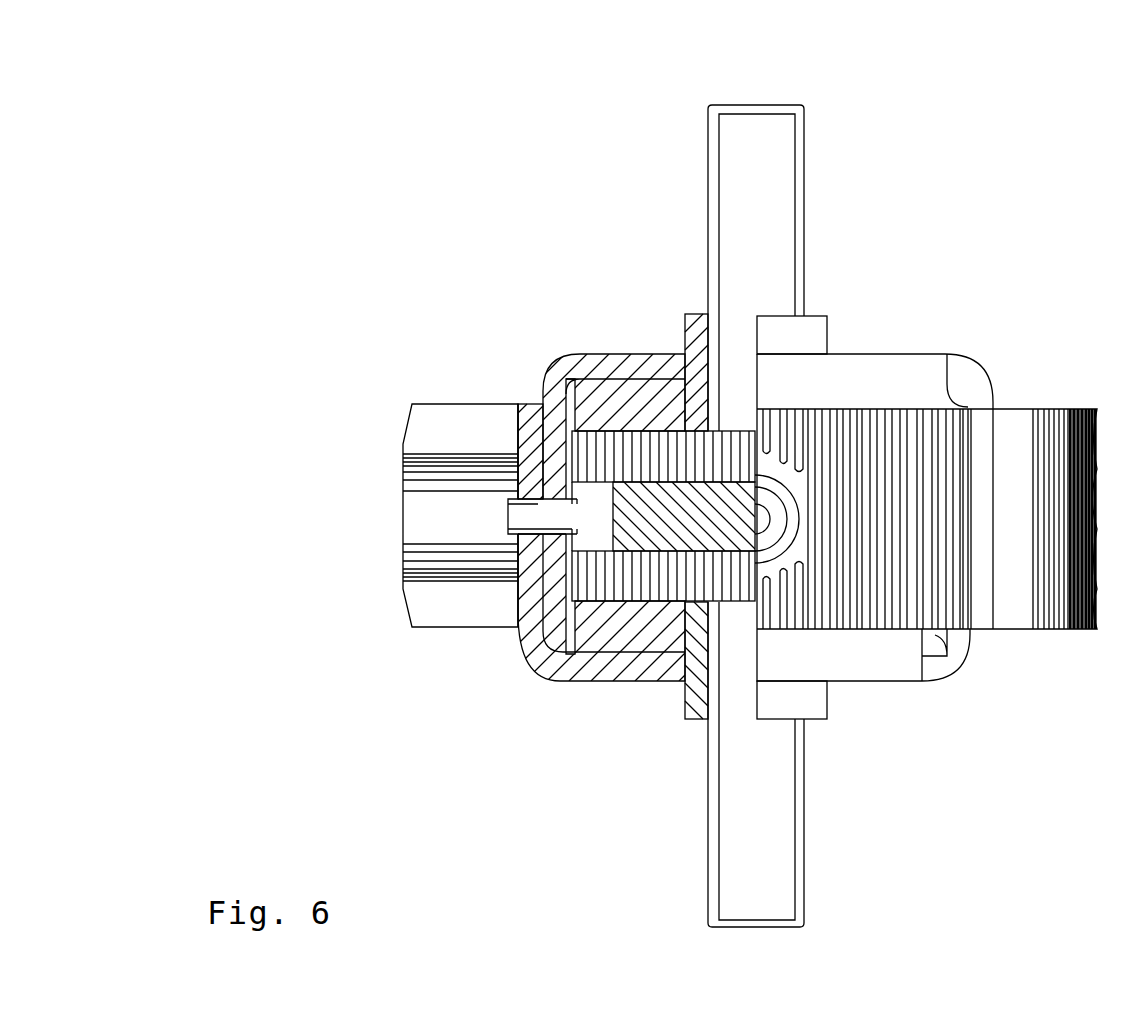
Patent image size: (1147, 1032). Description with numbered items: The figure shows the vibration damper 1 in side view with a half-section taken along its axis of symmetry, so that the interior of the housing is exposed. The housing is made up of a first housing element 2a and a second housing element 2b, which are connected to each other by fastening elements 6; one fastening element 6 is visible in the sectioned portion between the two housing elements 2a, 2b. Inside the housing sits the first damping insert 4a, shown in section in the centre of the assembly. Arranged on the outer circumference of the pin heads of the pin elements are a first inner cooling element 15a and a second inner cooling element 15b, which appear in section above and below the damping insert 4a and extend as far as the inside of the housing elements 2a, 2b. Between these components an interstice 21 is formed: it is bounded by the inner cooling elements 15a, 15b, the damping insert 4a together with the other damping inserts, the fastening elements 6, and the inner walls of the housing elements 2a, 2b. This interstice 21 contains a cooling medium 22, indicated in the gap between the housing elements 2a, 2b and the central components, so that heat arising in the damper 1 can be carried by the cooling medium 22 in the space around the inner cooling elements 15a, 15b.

The vibration damper 1 is at (935, 107).
The first housing element 2a is at (555, 400).
The second housing element 2b is at (552, 663).
The first damping insert 4a is at (720, 512).
The fastening elements 6 is at (518, 500).
The first inner cooling element 15a is at (628, 452).
The second inner cooling element 15b is at (622, 598).
The interstice 21 is at (588, 523).
The cooling medium 22 is at (532, 510).